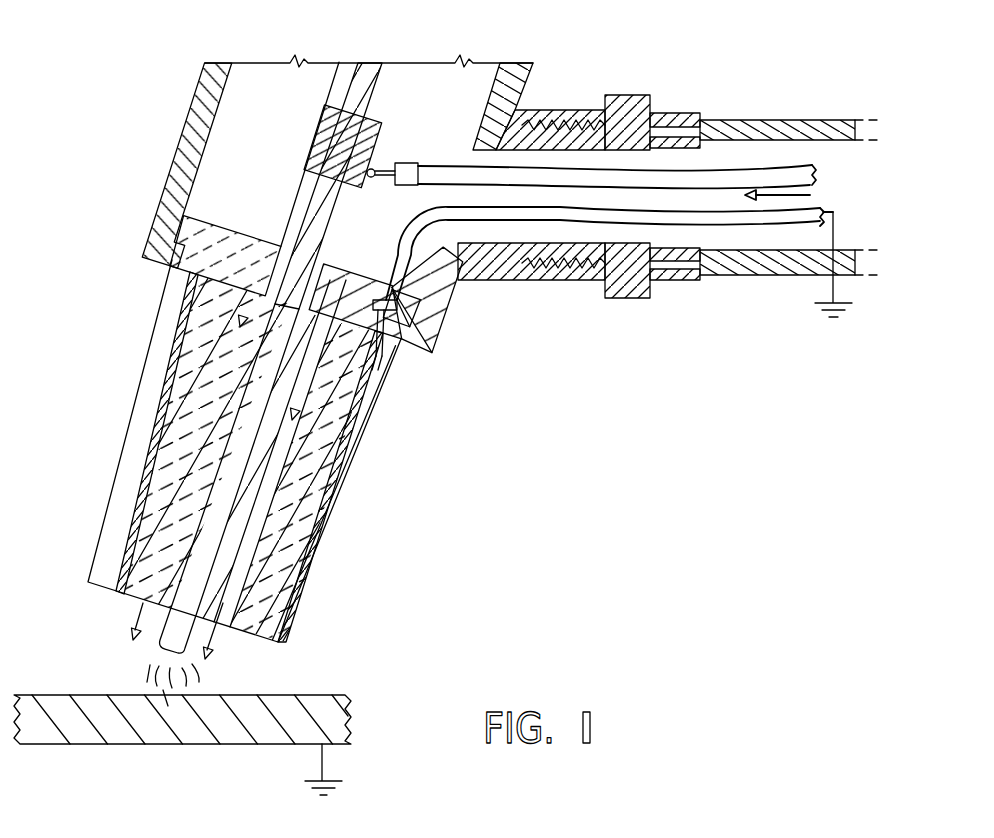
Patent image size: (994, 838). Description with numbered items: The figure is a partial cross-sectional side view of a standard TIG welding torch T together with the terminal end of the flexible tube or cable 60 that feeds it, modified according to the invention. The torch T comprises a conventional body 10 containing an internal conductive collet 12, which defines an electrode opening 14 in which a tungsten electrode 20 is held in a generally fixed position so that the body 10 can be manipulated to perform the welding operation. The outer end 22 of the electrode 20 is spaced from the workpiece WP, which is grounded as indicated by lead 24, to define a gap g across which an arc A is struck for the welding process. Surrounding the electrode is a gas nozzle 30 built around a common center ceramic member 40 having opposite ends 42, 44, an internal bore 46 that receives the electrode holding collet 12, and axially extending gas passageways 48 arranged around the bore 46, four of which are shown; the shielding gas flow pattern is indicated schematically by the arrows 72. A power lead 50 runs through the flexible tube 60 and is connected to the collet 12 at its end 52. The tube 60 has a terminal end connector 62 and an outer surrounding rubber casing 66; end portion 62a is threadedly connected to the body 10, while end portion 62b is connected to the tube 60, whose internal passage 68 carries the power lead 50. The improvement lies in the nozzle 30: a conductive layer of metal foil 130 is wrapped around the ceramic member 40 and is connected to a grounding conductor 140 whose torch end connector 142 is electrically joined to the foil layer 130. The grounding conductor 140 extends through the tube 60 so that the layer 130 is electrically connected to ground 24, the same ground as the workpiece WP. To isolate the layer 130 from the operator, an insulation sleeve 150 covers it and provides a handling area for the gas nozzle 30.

The TIG welding torch T is at (108, 127).
The body 10 is at (185, 118).
The conductive collet 12 is at (317, 127).
The electrode opening 14 is at (358, 130).
The center ceramic member 40 is at (224, 212).
The end of ceramic member 42 is at (364, 277).
The gas nozzle 30 is at (383, 428).
The end of ceramic member 44 is at (113, 597).
The internal bore 46 is at (210, 457).
The gas passageways 48 is at (272, 470).
The conductive layer of metal foil 130 is at (302, 555).
The insulation sleeve 150 is at (332, 515).
The tungsten electrode 20 is at (152, 642).
The outer end of electrode 22 is at (172, 654).
The gap g is at (142, 674).
The arc A is at (163, 688).
The gas flow arrows 72 is at (390, 209).
The power lead 50 is at (435, 172).
The end of power lead 52 is at (373, 169).
The grounding conductor 140 is at (477, 223).
The torch end connector 142 is at (398, 356).
The end portion 62a is at (560, 110).
The terminal end connector 62 is at (625, 95).
The end portion 62b is at (670, 113).
The rubber casing 66 is at (802, 120).
The flexible tube 60 is at (709, 290).
The internal passage 68 is at (765, 278).
The workpiece WP is at (345, 692).
The ground lead 24 is at (324, 770).